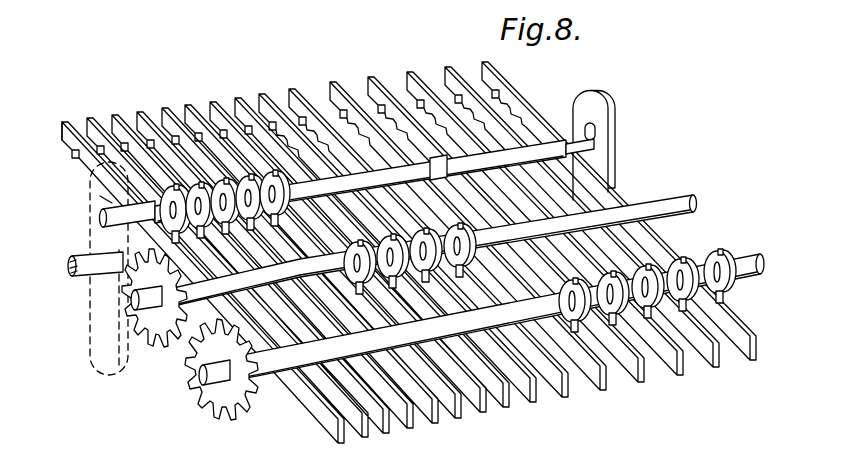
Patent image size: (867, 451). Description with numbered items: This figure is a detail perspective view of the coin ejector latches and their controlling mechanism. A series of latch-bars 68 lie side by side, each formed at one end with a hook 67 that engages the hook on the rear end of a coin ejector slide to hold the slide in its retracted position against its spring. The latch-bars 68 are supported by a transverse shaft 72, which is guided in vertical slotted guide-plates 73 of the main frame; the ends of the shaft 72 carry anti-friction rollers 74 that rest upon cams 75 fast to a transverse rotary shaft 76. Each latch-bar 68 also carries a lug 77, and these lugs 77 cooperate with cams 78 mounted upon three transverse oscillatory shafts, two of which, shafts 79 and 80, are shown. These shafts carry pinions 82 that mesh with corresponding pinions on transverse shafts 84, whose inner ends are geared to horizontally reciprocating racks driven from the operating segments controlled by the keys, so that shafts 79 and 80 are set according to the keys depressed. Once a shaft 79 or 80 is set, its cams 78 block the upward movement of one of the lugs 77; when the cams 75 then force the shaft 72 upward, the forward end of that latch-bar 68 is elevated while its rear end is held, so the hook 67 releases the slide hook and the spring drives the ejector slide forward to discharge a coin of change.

The hook 67 is at (72, 160).
The latch-bar 68 is at (597, 391).
The transverse shaft 72 is at (100, 224).
The slotted guide-plate 73 is at (602, 107).
The anti-friction roller 74 is at (77, 194).
The cam 75 is at (598, 163).
The transverse rotary shaft 76 is at (83, 272).
The lug 77 is at (678, 302).
The cam 78 is at (226, 180).
The transverse oscillatory shaft 79 is at (750, 275).
The transverse oscillatory shaft 80 is at (674, 196).
The pinion 82 is at (153, 330).
The transverse shaft 84 is at (322, 78).